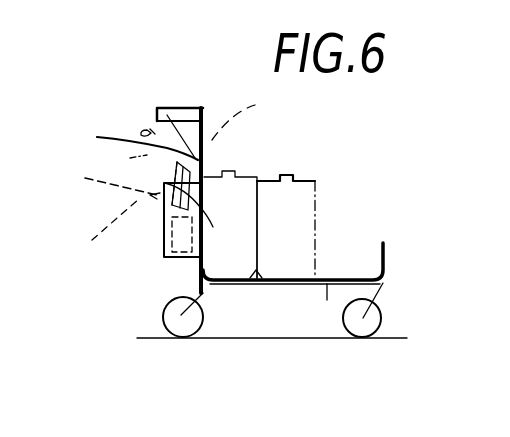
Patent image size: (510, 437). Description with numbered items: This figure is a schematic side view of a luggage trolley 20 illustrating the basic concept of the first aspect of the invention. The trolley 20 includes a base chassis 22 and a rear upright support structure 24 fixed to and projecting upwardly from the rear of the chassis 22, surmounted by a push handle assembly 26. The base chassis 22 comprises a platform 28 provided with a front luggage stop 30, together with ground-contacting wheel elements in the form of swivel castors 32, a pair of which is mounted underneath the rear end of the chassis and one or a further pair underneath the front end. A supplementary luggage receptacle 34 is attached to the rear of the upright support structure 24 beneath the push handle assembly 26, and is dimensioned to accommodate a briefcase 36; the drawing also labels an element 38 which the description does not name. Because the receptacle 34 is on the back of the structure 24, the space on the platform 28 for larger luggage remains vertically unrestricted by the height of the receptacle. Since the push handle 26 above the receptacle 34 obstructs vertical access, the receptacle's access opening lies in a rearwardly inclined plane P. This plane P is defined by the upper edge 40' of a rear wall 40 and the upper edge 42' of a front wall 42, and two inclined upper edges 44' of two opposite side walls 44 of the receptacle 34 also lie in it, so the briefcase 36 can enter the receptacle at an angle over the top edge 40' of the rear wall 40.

The luggage trolley 20 is at (345, 200).
The base chassis 22 is at (290, 296).
The rear upright support structure 24 is at (212, 152).
The push handle assembly 26 is at (150, 99).
The platform 28 is at (327, 300).
The front luggage stop 30 is at (383, 244).
The swivel castors 32 is at (190, 328).
The supplementary luggage receptacle 34 is at (152, 256).
The briefcase 36 is at (160, 176).
The container 38 is at (315, 181).
The rear wall 40 is at (104, 242).
The upper edge of rear wall 40' is at (211, 224).
The front wall 42 is at (272, 192).
The upper edge of front wall 42' is at (177, 99).
The side walls 44 is at (119, 299).
The inclined upper edges of side walls 44' is at (132, 158).
The rearwardly inclined plane P is at (252, 100).